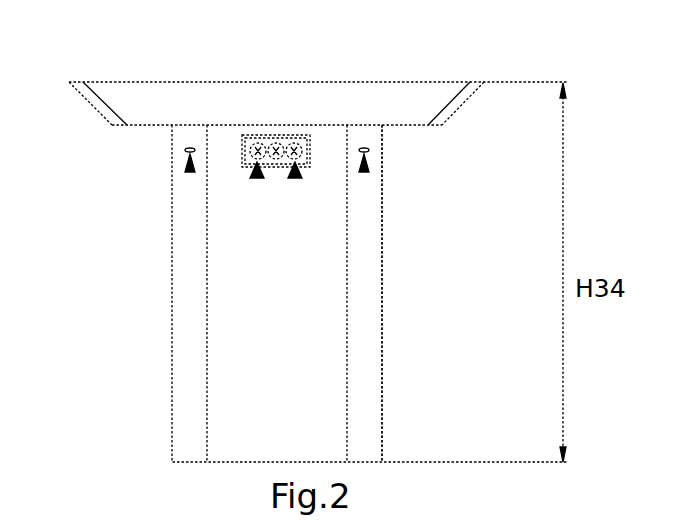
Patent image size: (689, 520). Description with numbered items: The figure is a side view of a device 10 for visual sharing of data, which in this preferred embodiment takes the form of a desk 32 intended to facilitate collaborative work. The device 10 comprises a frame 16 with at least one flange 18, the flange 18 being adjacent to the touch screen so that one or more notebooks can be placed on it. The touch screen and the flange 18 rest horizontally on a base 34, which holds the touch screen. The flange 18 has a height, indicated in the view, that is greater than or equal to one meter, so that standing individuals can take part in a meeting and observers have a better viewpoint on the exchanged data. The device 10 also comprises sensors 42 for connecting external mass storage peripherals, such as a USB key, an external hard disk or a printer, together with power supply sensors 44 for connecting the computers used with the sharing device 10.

The device for visual sharing of data 10 is at (106, 361).
The frame 16 is at (396, 333).
The flange 18 is at (434, 83).
The desk 32 is at (158, 252).
The base 34 is at (368, 264).
The sensors 42 is at (190, 172).
The power supply sensors 44 is at (257, 176).